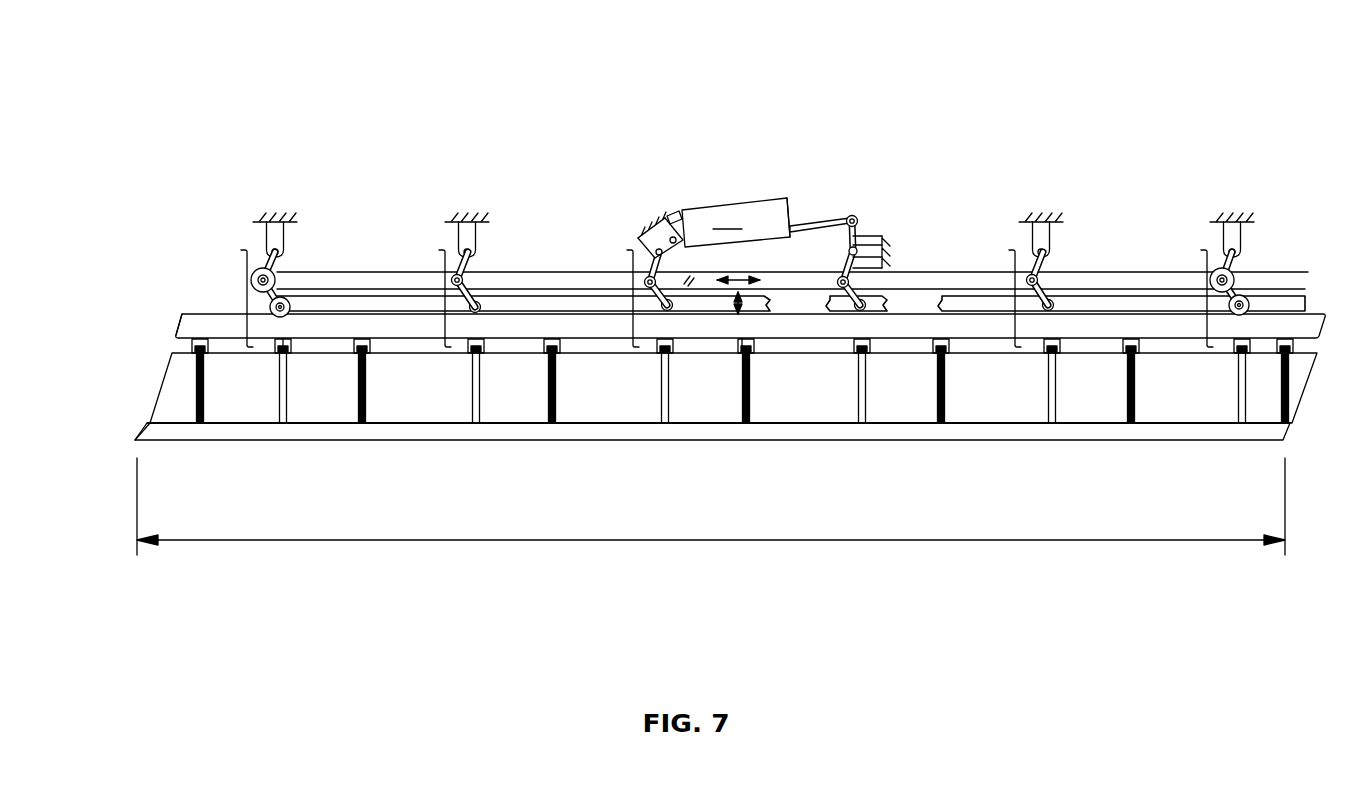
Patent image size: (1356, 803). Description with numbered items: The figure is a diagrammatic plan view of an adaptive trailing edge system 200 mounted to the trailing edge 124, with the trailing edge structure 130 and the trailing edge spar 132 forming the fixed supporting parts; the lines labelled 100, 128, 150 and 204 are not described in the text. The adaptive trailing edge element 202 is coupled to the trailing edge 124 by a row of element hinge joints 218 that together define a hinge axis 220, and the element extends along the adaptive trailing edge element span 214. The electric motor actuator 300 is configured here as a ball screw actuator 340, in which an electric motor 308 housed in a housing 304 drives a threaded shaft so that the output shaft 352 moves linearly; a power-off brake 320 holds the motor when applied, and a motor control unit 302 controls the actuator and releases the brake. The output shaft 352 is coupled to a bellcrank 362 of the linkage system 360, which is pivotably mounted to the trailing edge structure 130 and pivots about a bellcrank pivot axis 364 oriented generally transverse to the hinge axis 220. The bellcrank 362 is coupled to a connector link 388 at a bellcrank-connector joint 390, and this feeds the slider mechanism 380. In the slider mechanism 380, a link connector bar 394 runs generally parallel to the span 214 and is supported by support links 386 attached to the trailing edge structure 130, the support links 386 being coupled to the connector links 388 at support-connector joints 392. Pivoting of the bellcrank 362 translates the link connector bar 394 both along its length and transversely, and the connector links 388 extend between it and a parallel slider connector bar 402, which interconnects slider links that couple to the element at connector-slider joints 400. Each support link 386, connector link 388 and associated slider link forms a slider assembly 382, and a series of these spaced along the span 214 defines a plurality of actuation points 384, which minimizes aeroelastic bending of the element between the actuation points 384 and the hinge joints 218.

The mandrel support plate 100 is at (182, 325).
The trailing edge 124 is at (150, 428).
The platform 128 is at (162, 382).
The trailing edge structure 130 is at (284, 221).
The trailing edge spar 132 is at (207, 313).
The base corner 150 is at (142, 440).
The adaptive trailing edge system 200 is at (302, 82).
The adaptive trailing edge element 202 is at (607, 440).
The second base portion 204 is at (810, 432).
The adaptive trailing edge element span 214 is at (677, 545).
The element hinge joint 218 is at (197, 357).
The hinge axis 220 is at (243, 354).
The electric motor actuator 300 is at (784, 216).
The motor control unit 302 is at (713, 197).
The housing 304 is at (668, 215).
The electric motor 308 is at (744, 203).
The power-off brake 320 is at (770, 200).
The ball screw actuator 340 is at (736, 222).
The output shaft 352 is at (805, 222).
The linkage system 360 is at (867, 237).
The bellcrank 362 is at (856, 221).
The bellcrank pivot axis 364 is at (850, 251).
The slider mechanism 380 is at (1123, 272).
The slider assembly 382 is at (246, 292).
The actuation point 384 is at (288, 357).
The support link 386 is at (275, 270).
The connector link 388 is at (282, 292).
The bellcrank-connector joint 390 is at (850, 285).
The support-connector joint 392 is at (466, 275).
The link connector bar 394 is at (685, 277).
The connector-slider joint 400 is at (290, 304).
The slider connector bar 402 is at (762, 302).